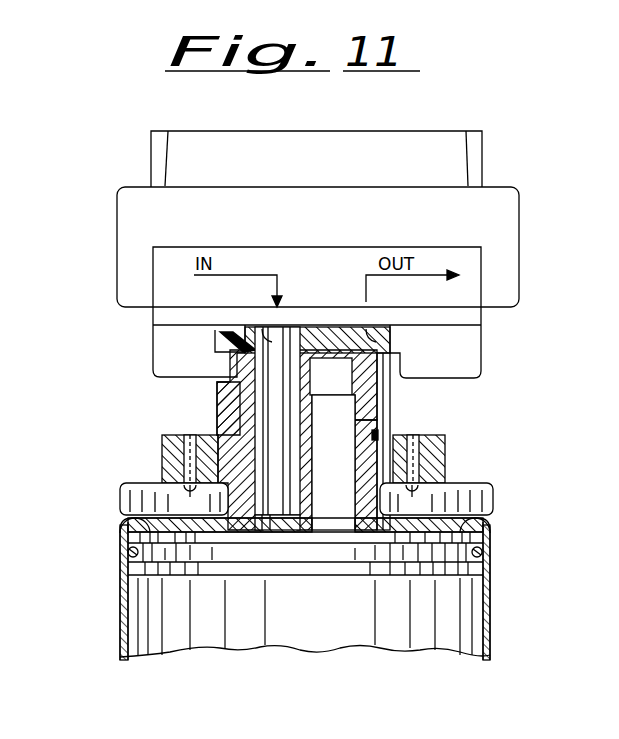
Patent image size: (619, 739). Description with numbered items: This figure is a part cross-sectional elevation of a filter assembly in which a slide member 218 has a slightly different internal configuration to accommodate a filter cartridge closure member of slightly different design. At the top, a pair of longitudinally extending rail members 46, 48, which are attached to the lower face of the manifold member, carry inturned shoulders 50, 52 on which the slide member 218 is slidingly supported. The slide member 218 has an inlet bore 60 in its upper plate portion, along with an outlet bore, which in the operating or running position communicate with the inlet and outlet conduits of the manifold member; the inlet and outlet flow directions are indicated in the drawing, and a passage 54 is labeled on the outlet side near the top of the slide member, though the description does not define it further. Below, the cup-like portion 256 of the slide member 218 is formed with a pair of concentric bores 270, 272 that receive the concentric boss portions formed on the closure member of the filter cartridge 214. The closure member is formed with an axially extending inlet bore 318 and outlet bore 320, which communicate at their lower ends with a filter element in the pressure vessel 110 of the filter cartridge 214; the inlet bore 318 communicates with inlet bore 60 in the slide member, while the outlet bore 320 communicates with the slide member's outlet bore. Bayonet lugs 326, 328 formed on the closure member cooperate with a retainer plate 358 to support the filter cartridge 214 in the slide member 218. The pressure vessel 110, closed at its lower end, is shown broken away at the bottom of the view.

The rail member 46 is at (167, 367).
The rail member 48 is at (481, 378).
The inturned shoulder 50 is at (222, 352).
The inturned shoulder 52 is at (408, 354).
The outlet passage 54 is at (377, 335).
The inlet bore 60 is at (277, 333).
The pressure vessel 110 is at (490, 603).
The filter cartridge 214 is at (504, 536).
The slide member 218 is at (398, 405).
The cup portion 256 is at (447, 440).
The concentric bore 270 is at (255, 350).
The concentric bore 272 is at (242, 411).
The inlet bore 318 is at (278, 367).
The outlet bore 320 is at (318, 435).
The bayonet lug 326 is at (213, 481).
The bayonet lug 328 is at (397, 460).
The retainer plate 358 is at (492, 500).